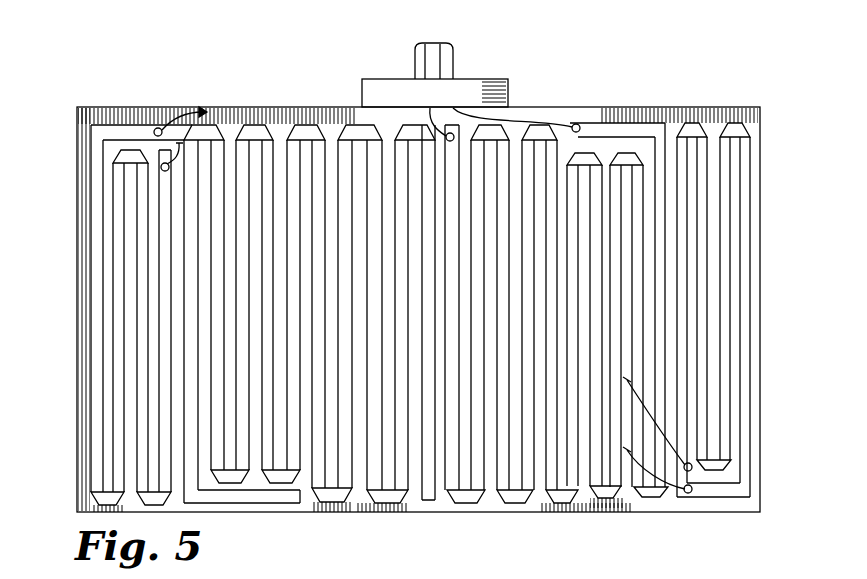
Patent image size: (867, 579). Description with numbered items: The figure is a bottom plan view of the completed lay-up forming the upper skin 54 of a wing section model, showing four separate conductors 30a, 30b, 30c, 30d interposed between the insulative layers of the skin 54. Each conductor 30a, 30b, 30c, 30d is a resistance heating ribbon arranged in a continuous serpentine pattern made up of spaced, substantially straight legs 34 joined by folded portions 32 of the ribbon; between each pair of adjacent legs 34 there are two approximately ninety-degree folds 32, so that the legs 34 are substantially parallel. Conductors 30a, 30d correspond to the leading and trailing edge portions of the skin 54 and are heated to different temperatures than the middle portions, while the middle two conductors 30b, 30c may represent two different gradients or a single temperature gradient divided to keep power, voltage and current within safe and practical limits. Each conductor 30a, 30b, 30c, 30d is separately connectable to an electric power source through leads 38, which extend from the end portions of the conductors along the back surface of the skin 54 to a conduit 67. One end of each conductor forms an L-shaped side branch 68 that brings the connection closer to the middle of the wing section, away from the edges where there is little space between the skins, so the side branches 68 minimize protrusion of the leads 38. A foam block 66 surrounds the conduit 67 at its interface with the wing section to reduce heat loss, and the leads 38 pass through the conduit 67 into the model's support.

The conductor 30a is at (125, 507).
The conductor 30b is at (396, 523).
The conductor 30c is at (500, 524).
The conductor 30d is at (712, 115).
The folded portion 32 is at (743, 130).
The leg 34 is at (752, 282).
The lead 38 is at (541, 109).
The upper skin 54 is at (203, 86).
The foam block 66 is at (481, 79).
The conduit 67 is at (415, 60).
The L-shaped side branch 68 is at (112, 128).